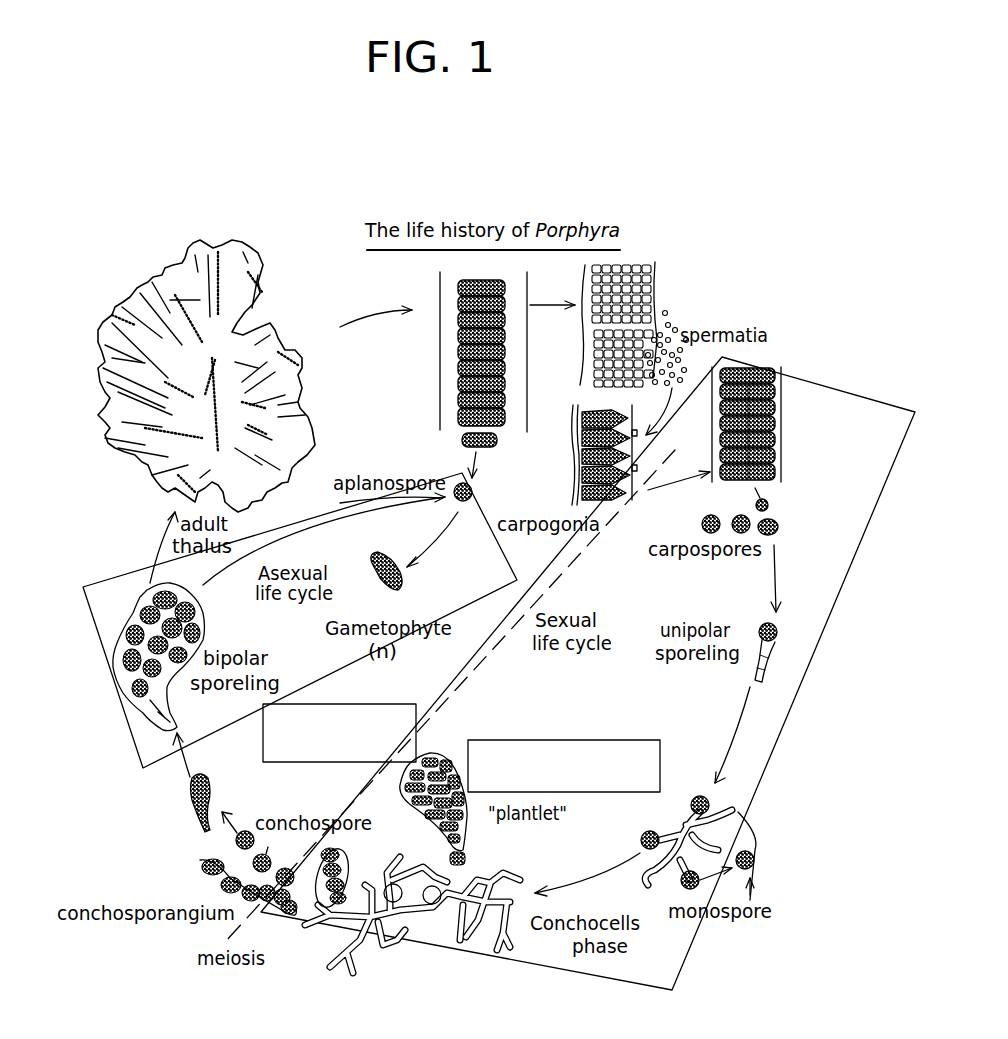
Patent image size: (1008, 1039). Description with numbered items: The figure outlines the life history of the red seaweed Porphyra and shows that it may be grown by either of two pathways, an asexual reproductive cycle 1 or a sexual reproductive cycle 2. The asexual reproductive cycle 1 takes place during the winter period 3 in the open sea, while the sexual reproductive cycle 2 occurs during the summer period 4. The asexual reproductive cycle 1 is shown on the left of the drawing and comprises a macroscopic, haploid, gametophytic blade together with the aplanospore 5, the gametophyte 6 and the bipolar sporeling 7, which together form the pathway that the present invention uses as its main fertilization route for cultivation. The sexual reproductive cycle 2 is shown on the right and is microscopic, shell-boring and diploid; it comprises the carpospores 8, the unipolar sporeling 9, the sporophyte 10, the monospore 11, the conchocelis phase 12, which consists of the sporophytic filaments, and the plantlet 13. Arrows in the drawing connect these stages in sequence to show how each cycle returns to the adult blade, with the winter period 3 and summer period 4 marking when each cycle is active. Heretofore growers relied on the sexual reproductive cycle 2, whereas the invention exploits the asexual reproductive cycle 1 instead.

The asexual reproductive cycle 1 is at (115, 683).
The sexual reproductive cycle 2 is at (772, 762).
The winter period 3 is at (263, 747).
The summer period 4 is at (628, 795).
The aplanospore 5 is at (463, 473).
The gametophyte 6 is at (375, 560).
The bipolar sporeling 7 is at (147, 717).
The carpospores 8 is at (778, 526).
The unipolar sporeling 9 is at (778, 640).
The sporophyte 10 is at (603, 718).
The monospore 11 is at (757, 862).
The conchocelis phase 12 is at (650, 950).
The plantlet 13 is at (470, 830).